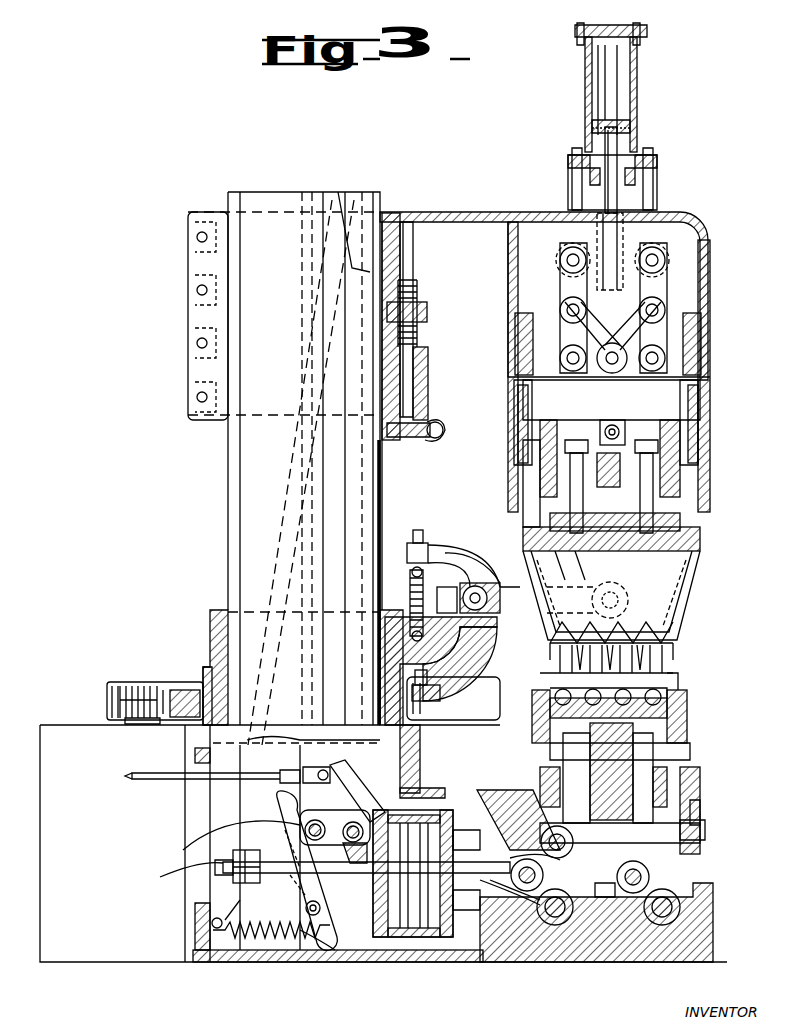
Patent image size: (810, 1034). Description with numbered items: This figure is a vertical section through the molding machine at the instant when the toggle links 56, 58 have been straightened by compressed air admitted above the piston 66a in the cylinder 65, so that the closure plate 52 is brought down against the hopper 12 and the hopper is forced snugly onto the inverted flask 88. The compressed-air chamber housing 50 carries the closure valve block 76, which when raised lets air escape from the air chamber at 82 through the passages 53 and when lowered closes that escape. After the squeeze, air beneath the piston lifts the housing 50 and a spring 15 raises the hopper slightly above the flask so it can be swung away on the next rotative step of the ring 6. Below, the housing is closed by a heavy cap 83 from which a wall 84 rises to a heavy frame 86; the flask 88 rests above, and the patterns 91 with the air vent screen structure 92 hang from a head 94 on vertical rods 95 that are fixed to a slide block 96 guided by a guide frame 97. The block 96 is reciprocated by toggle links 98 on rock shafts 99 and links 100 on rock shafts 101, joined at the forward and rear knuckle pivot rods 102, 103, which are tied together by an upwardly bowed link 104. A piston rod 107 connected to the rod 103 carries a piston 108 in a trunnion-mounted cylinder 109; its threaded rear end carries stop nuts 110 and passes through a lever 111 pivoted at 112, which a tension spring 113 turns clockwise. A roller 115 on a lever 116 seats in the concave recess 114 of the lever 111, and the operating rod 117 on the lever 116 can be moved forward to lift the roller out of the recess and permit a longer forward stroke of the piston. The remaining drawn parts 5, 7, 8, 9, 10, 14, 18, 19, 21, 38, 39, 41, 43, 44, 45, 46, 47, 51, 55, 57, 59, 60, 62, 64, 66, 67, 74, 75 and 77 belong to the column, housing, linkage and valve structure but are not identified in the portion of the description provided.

The frame wall 5 is at (382, 486).
The ring 6 is at (212, 640).
The flange foot 7 is at (208, 668).
The bracket base 8 is at (420, 728).
The cam segment 9 is at (475, 645).
The arc guide 10 is at (505, 583).
The hopper 12 is at (690, 585).
The arm 14 is at (448, 552).
The spring 15 is at (413, 605).
The pivot block 18 is at (445, 702).
The gear 19 is at (138, 690).
The base 21 is at (62, 740).
The gear housing 38 is at (115, 683).
The column 39 is at (282, 518).
The housing 41 is at (455, 212).
The collar 43 is at (430, 367).
The threaded rod 44 is at (420, 336).
The bolt 45 is at (416, 246).
The nut 46 is at (428, 312).
The bracket 47 is at (420, 438).
The air chamber housing 50 is at (680, 496).
The pin housing 51 is at (705, 382).
The closure plate 52 is at (702, 543).
The passages 53 is at (572, 567).
The links 55 is at (565, 225).
The toggle links 56 is at (562, 328).
The lower pins 57 is at (667, 358).
The toggle links 58 is at (565, 285).
The pin bushings 59 is at (660, 258).
The toggle link 60 is at (635, 316).
The plunger rod 62 is at (628, 332).
The piston rod 64 is at (620, 200).
The cylinder 65 is at (638, 68).
The bracket 66 is at (658, 178).
The piston 66a is at (625, 122).
The side plates 67 is at (703, 340).
The bolts 74 is at (545, 452).
The bolts 75 is at (570, 486).
The closure valve block 76 is at (682, 518).
The pivot 77 is at (628, 440).
The air chamber 82 is at (540, 502).
The cap 83 is at (690, 778).
The wall 84 is at (672, 755).
The frame 86 is at (670, 712).
The flask 88 is at (680, 660).
The patterns 91 is at (678, 680).
The air vent screen structure 92 is at (570, 700).
The head 94 is at (560, 735).
The rods or posts 95 is at (565, 770).
The slide block 96 is at (705, 830).
The guide frame 97 is at (702, 812).
The links 98 is at (650, 882).
The rock shafts 99 is at (682, 912).
The links 100 is at (540, 850).
The rock shafts 101 is at (520, 820).
The forward knee pivot rod 102 is at (625, 940).
The rear knuckle pivot rod 103 is at (520, 885).
The link 104 is at (600, 890).
The piston rod 107 is at (470, 885).
The piston 108 is at (410, 935).
The cylinder 109 is at (385, 925).
The stop nuts 110 is at (240, 872).
The lever 111 is at (255, 910).
The pivot 112 is at (308, 950).
The tension spring 113 is at (262, 942).
The concave recess 114 is at (300, 827).
The roller 115 is at (250, 855).
The lever 116 is at (340, 790).
The operating rod 117 is at (148, 778).